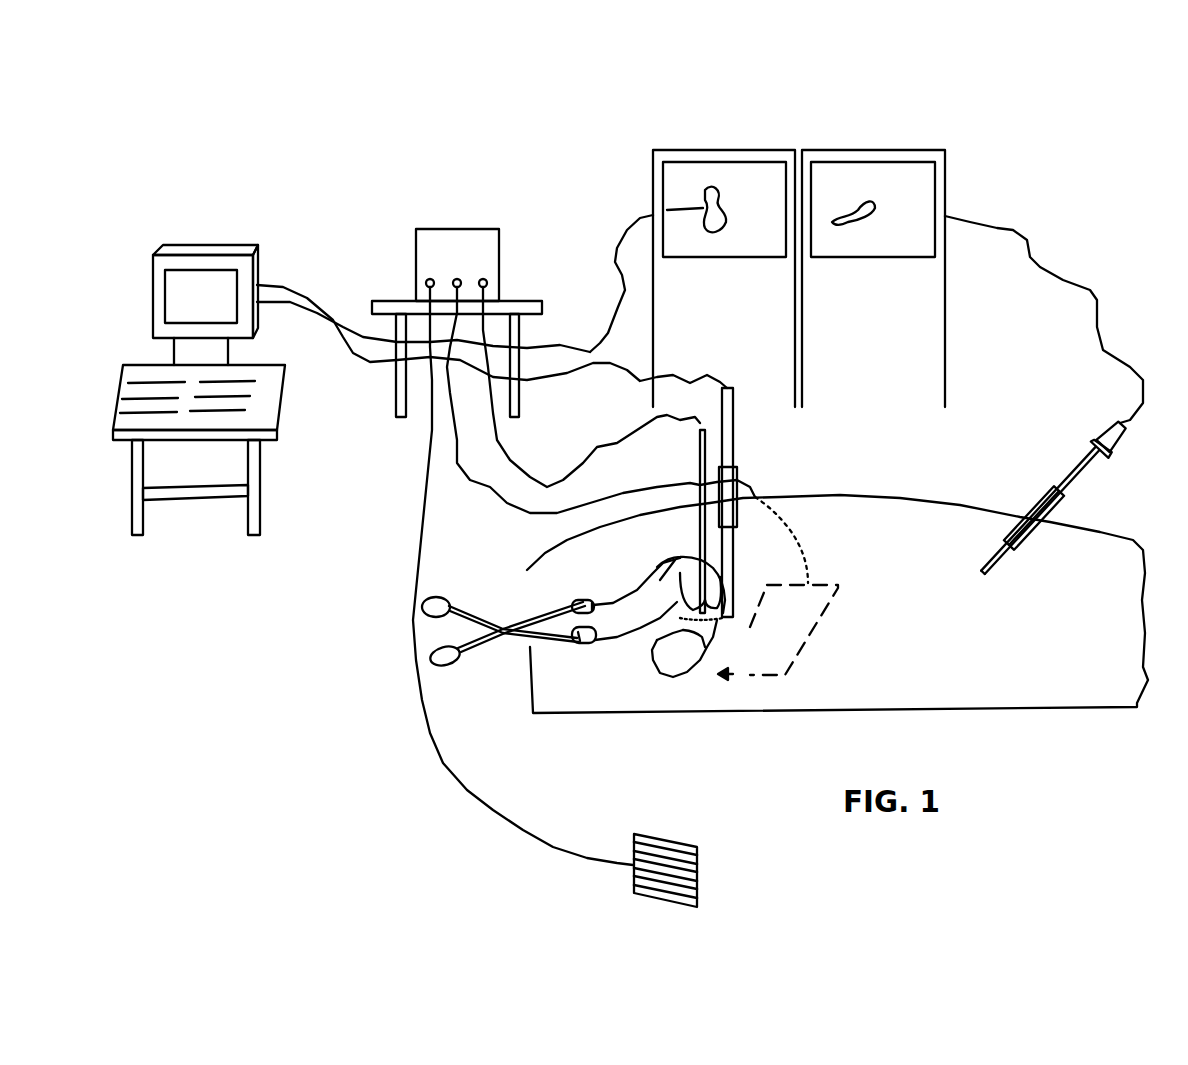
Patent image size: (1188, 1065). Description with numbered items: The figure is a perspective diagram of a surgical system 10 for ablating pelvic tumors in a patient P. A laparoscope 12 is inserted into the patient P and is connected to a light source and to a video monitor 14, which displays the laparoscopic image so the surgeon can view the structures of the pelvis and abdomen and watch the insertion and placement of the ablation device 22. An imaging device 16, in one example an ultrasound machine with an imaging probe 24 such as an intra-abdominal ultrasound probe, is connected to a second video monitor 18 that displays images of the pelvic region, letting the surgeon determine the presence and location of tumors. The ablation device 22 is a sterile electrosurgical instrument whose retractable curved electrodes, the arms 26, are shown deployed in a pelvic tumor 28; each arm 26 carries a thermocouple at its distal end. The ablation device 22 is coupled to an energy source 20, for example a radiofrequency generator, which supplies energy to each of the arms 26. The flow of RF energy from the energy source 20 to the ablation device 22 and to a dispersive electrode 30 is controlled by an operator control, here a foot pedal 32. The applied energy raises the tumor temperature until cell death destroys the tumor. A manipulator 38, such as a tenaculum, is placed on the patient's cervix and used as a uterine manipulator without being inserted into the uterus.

The surgical system 10 is at (1103, 193).
The laparoscope 12 is at (1072, 483).
The video monitor 14 is at (873, 160).
The imaging device 16 is at (137, 365).
The video monitor 18 is at (718, 160).
The energy source 20 is at (455, 229).
The ablation device 22 is at (697, 458).
The imaging probe 24 is at (735, 430).
The arms 26 is at (690, 565).
The pelvic tumor 28 is at (708, 625).
The dispersive electrode 30 is at (823, 619).
The foot pedal 32 is at (672, 840).
The manipulator 38 is at (475, 620).
The patient P is at (1132, 620).